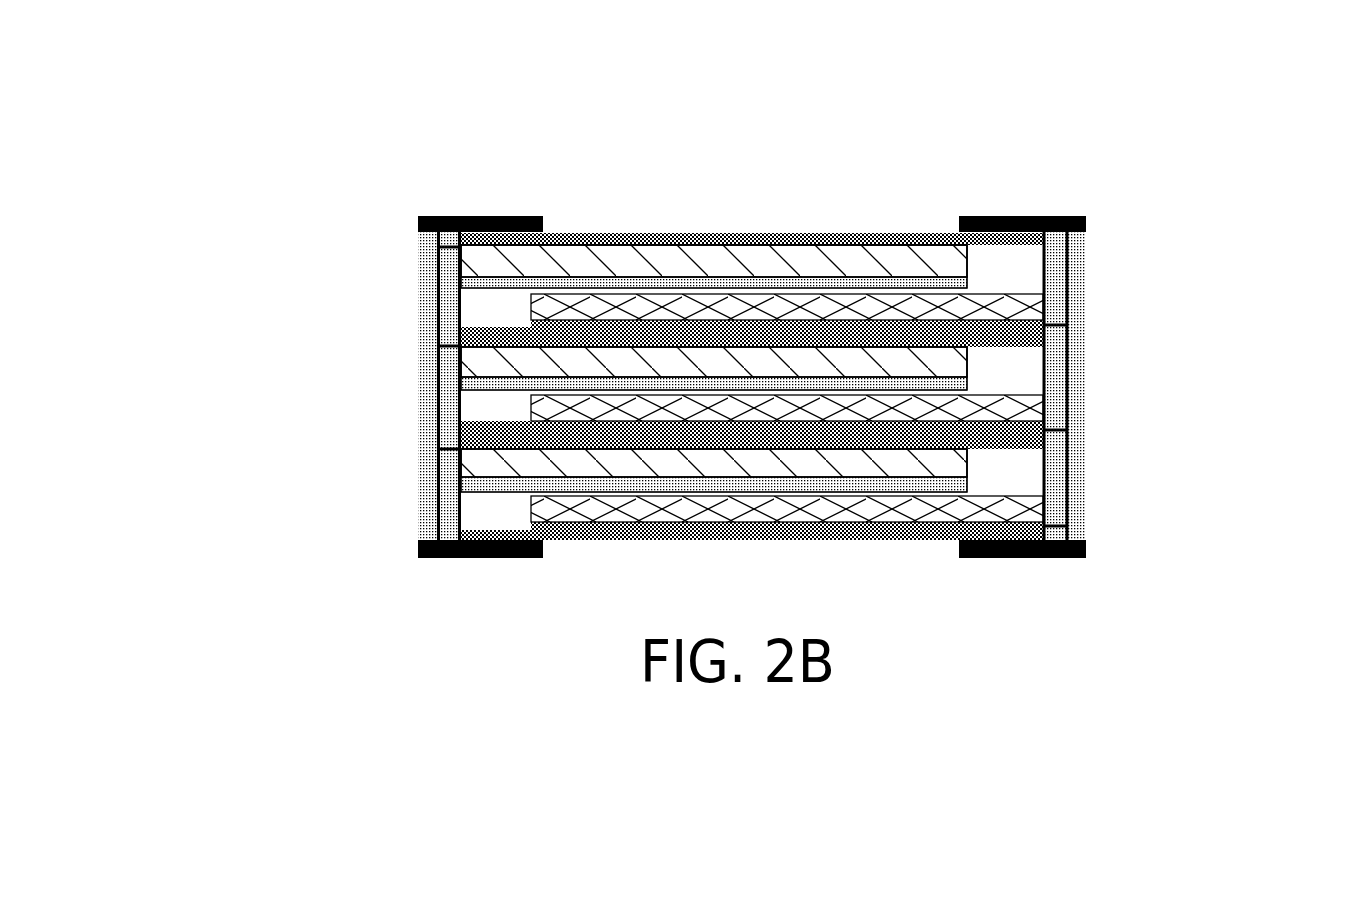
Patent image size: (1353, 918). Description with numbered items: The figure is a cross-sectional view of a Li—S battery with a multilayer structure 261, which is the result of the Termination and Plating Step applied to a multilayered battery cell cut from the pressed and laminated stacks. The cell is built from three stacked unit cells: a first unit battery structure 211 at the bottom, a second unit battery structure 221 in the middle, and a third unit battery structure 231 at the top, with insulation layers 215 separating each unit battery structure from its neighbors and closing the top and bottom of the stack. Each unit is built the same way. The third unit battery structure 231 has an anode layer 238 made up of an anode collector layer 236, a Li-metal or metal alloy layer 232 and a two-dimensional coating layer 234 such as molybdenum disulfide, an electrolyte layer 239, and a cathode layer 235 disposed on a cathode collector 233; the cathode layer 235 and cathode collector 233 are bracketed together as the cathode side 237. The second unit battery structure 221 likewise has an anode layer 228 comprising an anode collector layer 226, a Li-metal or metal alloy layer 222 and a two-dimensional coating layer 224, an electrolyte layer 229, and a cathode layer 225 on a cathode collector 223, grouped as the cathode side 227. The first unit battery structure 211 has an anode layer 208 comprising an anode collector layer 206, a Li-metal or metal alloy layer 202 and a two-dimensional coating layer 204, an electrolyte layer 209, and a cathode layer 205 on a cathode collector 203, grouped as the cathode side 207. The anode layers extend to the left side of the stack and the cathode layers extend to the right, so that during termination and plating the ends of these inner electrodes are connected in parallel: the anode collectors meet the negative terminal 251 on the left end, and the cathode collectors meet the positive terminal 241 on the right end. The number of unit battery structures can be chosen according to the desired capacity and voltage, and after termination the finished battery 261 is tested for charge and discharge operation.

The Li—S battery with a multilayer structure 261 is at (1021, 135).
The negative terminal 251 is at (457, 365).
The positive terminal 241 is at (1038, 364).
The insulation layers 215 is at (1162, 343).
The third unit battery structure 231 is at (1255, 228).
The anode layer 238 is at (1158, 228).
The anode collector layer 236 is at (967, 244).
The Li-metal or metal alloy layer 232 is at (967, 259).
The 2D coating layer 234 is at (967, 276).
The electrolyte layer 239 is at (411, 291).
The second electrode 237 is at (1200, 285).
The cathode layer 235 is at (1020, 309).
The cathode collector 233 is at (1043, 322).
The second unit battery structure 221 is at (230, 340).
The anode layer 228 is at (290, 335).
The anode collector layer 226 is at (461, 345).
The Li-metal or metal alloy layer 222 is at (461, 362).
The 2D coating layer 224 is at (461, 383).
The electrolyte layer 229 is at (707, 385).
The second electrode of second cell 227 is at (372, 400).
The cathode layer 225 is at (532, 410).
The cathode collector 223 is at (461, 427).
The first unit battery structure 211 is at (1255, 437).
The anode layer 208 is at (1152, 440).
The anode collector layer 206 is at (967, 449).
The Li-metal or metal alloy layer 202 is at (967, 467).
The 2D coating layer 204 is at (967, 483).
The electrolyte layer 209 is at (401, 519).
The second electrode of third cell 207 is at (1195, 497).
The cathode layer 205 is at (1020, 508).
The cathode collector 203 is at (1043, 525).